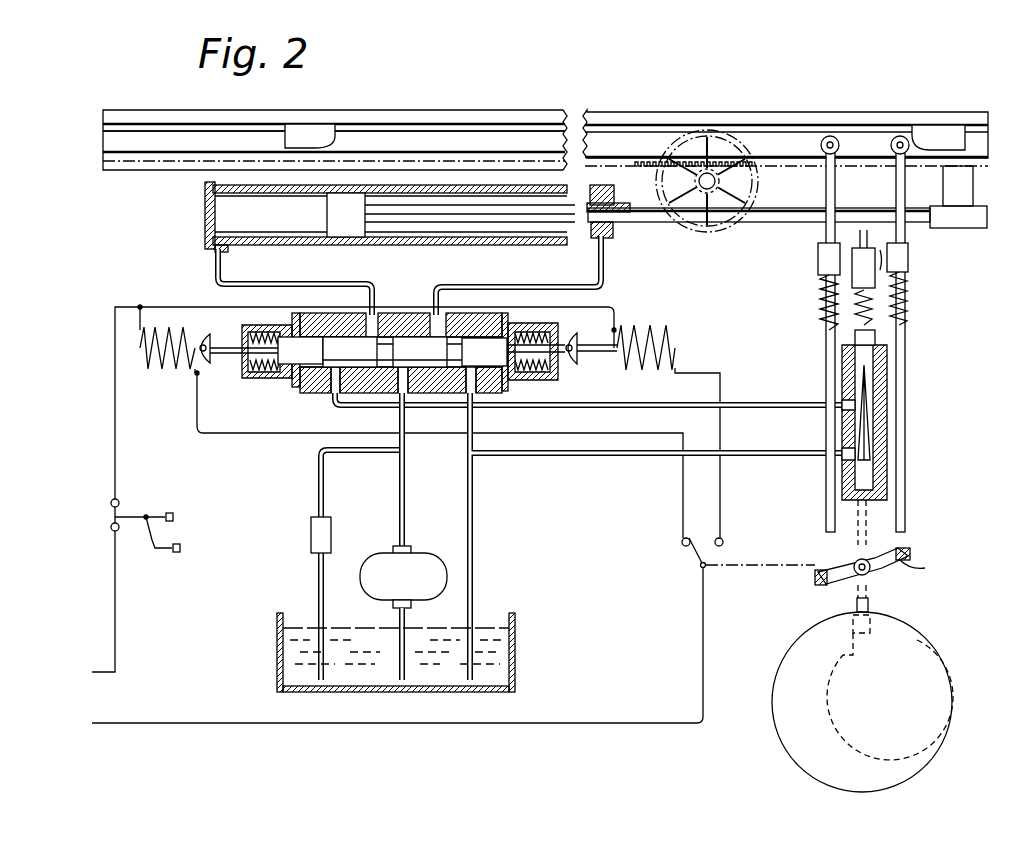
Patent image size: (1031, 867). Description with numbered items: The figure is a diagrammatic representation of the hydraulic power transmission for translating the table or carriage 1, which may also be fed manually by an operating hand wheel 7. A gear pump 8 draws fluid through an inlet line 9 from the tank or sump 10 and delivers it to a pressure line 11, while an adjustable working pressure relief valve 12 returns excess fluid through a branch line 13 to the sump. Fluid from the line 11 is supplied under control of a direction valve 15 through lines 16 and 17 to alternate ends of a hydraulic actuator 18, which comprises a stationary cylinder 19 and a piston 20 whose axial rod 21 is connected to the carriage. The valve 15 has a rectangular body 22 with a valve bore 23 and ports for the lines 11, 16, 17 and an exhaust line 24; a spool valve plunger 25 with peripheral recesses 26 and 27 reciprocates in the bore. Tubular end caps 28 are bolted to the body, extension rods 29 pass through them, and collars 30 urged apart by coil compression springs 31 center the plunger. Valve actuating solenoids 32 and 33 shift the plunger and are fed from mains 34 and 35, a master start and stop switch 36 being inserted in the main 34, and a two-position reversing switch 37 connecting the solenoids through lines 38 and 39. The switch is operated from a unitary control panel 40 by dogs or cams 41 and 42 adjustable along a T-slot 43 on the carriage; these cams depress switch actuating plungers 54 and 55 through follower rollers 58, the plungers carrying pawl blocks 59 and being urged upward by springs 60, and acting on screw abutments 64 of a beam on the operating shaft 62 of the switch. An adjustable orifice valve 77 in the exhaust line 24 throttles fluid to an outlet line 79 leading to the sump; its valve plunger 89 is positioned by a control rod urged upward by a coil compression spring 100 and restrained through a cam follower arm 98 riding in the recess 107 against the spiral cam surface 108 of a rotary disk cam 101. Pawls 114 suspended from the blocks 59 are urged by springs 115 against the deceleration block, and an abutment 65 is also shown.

The table or carriage 1 is at (808, 112).
The operating hand wheel 7 is at (757, 195).
The gear pump 8 is at (386, 562).
The inlet line 9 is at (398, 617).
The tank or sump 10 is at (516, 632).
The pressure line 11 is at (406, 510).
The working pressure relief valve 12 is at (311, 537).
The branch line 13 is at (318, 570).
The direction valve 15 is at (316, 400).
The line 16 is at (214, 266).
The line 17 is at (608, 265).
The hydraulic actuator 18 is at (198, 212).
The stationary cylinder 19 is at (502, 244).
The piston 20 is at (335, 213).
The axial rod 21 is at (803, 225).
The valve body 22 is at (500, 390).
The valve bore 23 is at (352, 336).
The exhaust line 24 is at (608, 409).
The valve plunger 25 is at (466, 390).
The peripheral recess 26 is at (398, 337).
The peripheral recess 27 is at (420, 380).
The tubular end cap 28 is at (250, 374).
The extension rod 29 is at (213, 357).
The collar 30 is at (262, 376).
The coil compression spring 31 is at (260, 331).
The valve actuating solenoid 32 is at (159, 383).
The valve actuating solenoid 33 is at (690, 337).
The main 34 is at (128, 634).
The main 35 is at (146, 722).
The master start and stop switch 36 is at (137, 501).
The reversing switch 37 is at (695, 563).
The line 38 is at (265, 431).
The line 39 is at (722, 378).
The unitary control panel 40 is at (913, 410).
The dog or cam 41 is at (306, 126).
The dog or cam 42 is at (940, 128).
The longitudinal T-slot 43 is at (457, 128).
The switch actuating plunger 54 is at (825, 372).
The switch actuating plunger 55 is at (905, 350).
The follower roller 58 is at (838, 148).
The pawl block 59 is at (826, 262).
The coil compression spring 60 is at (820, 310).
The operating shaft 62 is at (752, 568).
The screw abutment 64 is at (905, 545).
The cam follower 65 is at (925, 568).
The adjustable orifice valve 77 is at (888, 405).
The outlet line 79 is at (574, 456).
The valve plunger 89 is at (880, 366).
The cam follower arm 98 is at (880, 612).
The coil compression spring 100 is at (874, 312).
The rotary disk cam 101 is at (945, 690).
The recess 107 is at (890, 663).
The spiral cam surface 108 is at (920, 660).
The pawl 114 is at (850, 252).
The coil compression spring 115 is at (908, 272).